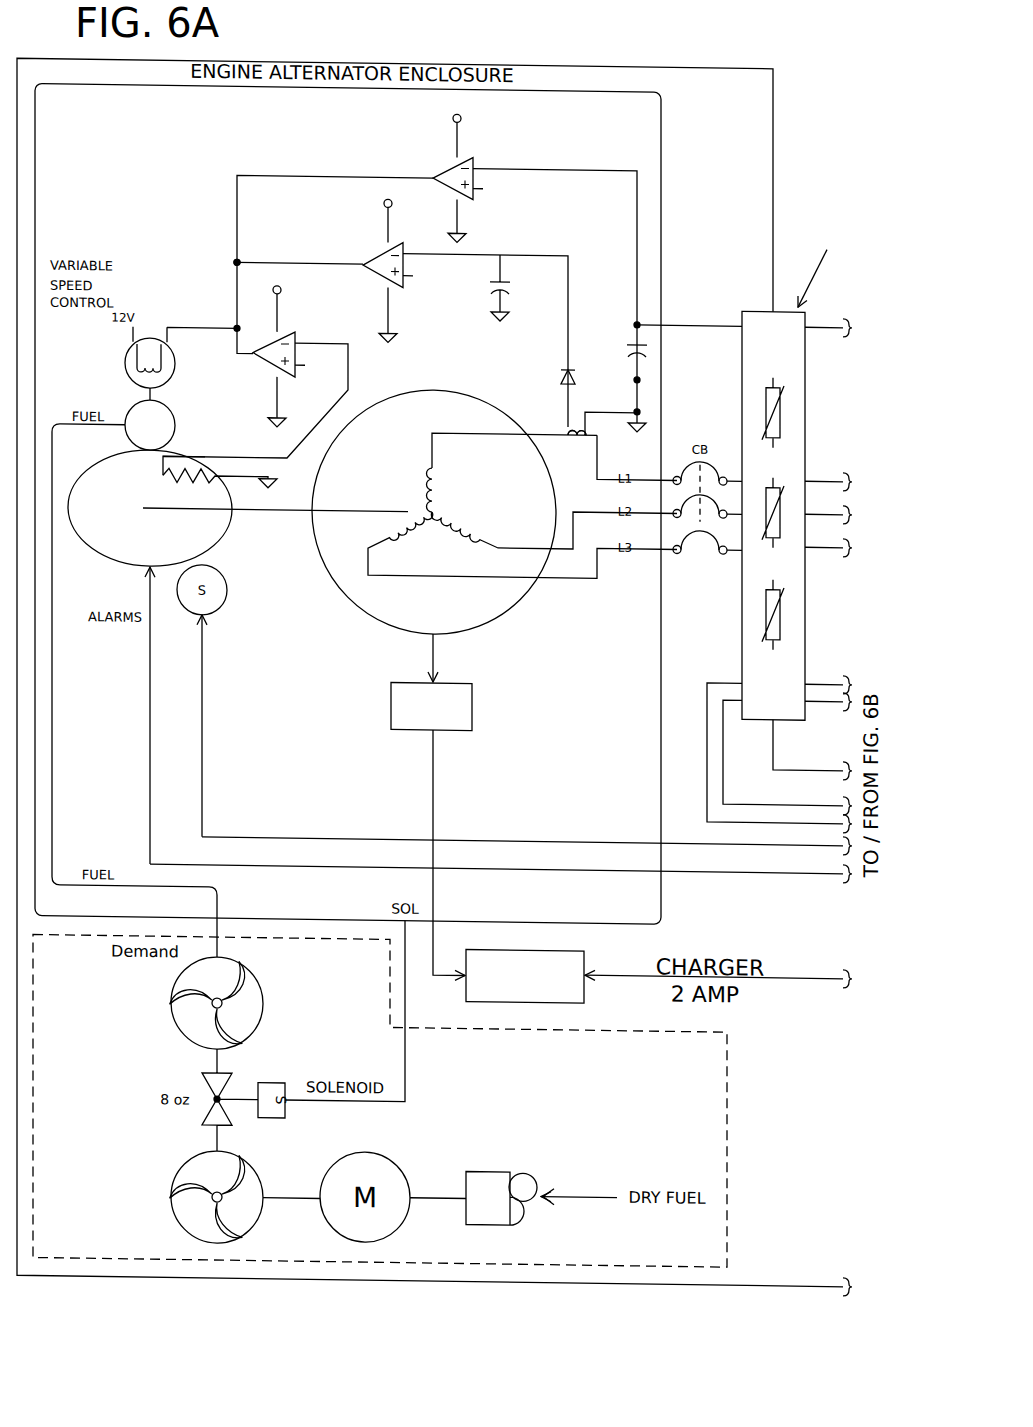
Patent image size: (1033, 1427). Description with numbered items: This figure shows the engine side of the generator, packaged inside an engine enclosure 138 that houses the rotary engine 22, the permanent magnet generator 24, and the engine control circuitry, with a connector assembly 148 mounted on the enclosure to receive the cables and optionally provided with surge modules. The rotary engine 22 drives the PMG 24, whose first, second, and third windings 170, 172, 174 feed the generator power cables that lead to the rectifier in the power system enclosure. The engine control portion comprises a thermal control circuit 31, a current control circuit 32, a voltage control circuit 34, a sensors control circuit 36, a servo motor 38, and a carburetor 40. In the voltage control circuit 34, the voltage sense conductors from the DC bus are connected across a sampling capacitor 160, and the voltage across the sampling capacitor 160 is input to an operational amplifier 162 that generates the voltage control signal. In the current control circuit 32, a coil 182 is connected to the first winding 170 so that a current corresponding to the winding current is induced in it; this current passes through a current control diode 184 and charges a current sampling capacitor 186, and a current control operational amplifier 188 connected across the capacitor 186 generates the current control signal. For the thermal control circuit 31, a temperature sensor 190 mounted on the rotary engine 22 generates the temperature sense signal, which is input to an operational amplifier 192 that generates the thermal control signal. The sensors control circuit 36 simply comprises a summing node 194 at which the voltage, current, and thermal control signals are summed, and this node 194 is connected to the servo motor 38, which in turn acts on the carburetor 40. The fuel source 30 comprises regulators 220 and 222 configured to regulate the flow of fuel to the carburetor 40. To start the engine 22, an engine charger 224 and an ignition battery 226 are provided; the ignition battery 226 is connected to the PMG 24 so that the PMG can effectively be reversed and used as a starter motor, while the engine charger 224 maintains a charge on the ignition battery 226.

The rotary engine 22 is at (127, 555).
The permanent magnet generator 24 is at (370, 592).
The fuel source 30 is at (705, 1082).
The thermal control circuit 31 is at (353, 357).
The current control circuit 32 is at (578, 237).
The voltage control circuit 34 is at (497, 153).
The sensors control circuit 36 is at (234, 171).
The servo motor 38 is at (130, 373).
The carburetor 40 is at (167, 411).
The engine enclosure 138 is at (743, 130).
The connector assembly 148 is at (757, 307).
The sampling capacitor 160 is at (625, 326).
The operational amplifier 162 is at (445, 162).
The first winding 170 is at (437, 471).
The second winding 172 is at (460, 516).
The third winding 174 is at (408, 517).
The coil 182 is at (557, 419).
The current control diode 184 is at (558, 355).
The current sampling capacitor 186 is at (483, 285).
The current control operational amplifier 188 is at (370, 250).
The temperature sensor 190 is at (200, 478).
The operational amplifier 192 is at (267, 333).
The summing node 194 is at (240, 257).
The regulator 220 is at (253, 997).
The regulator 222 is at (140, 1158).
The engine charger 224 is at (391, 695).
The ignition battery 226 is at (550, 995).